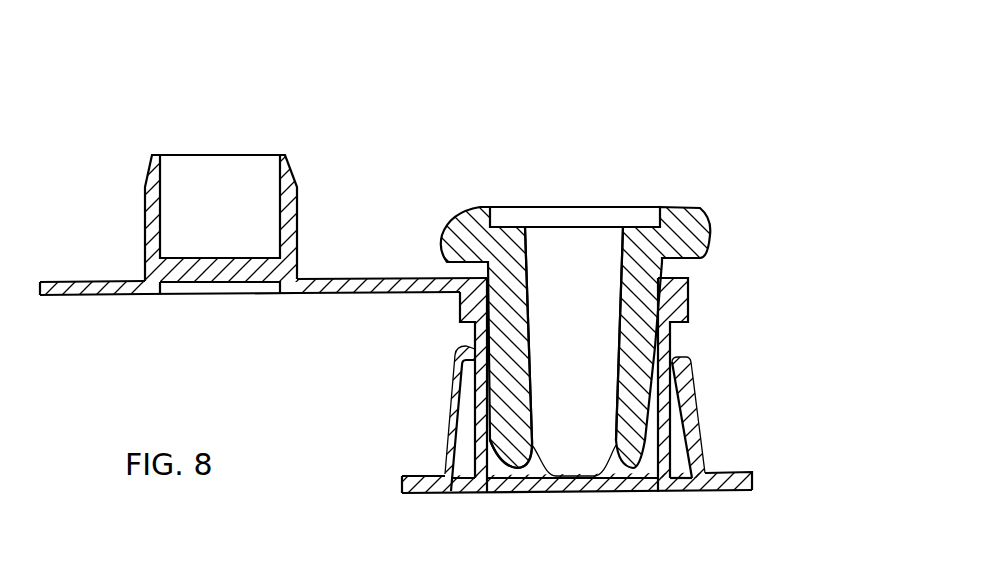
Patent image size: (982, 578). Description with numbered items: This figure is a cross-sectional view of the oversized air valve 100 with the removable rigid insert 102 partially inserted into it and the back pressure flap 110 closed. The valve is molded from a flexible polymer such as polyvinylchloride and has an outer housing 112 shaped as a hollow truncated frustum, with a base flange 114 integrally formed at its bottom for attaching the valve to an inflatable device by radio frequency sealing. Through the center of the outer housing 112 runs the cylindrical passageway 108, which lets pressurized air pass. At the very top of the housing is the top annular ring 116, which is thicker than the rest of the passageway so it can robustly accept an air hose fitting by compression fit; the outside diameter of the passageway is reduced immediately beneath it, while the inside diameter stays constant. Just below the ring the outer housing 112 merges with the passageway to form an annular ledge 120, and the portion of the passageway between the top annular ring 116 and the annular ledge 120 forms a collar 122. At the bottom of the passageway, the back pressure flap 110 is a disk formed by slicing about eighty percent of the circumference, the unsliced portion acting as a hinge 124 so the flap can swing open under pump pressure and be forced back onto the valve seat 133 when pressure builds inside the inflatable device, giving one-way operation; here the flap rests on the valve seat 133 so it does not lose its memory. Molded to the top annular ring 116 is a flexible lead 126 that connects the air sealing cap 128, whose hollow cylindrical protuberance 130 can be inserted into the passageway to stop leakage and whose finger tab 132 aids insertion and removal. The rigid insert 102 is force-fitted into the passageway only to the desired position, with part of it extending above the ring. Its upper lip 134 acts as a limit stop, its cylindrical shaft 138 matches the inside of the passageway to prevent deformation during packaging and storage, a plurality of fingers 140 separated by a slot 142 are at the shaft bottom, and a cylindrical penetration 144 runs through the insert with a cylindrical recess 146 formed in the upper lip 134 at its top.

The oversized air valve 100 is at (646, 130).
The removable rigid insert 102 is at (699, 214).
The cylindrical passageway 108 is at (500, 465).
The back pressure flap 110 is at (631, 492).
The outer housing 112 is at (700, 420).
The base flange 114 is at (743, 470).
The top annular ring 116 is at (688, 300).
The annular ledge 120 is at (674, 352).
The collar 122 is at (475, 335).
The hinge 124 is at (478, 497).
The flexible lead 126 is at (343, 281).
The air sealing cap 128 is at (222, 292).
The hollow cylindrical protuberance 130 is at (162, 155).
The finger tab 132 is at (85, 281).
The valve seat 133 is at (673, 455).
The upper lip 134 is at (710, 236).
The shaft 138 is at (527, 257).
The plurality of fingers 140 is at (513, 457).
The slot 142 is at (612, 457).
The cylindrical penetration 144 is at (592, 250).
The cylindrical recess 146 is at (573, 220).